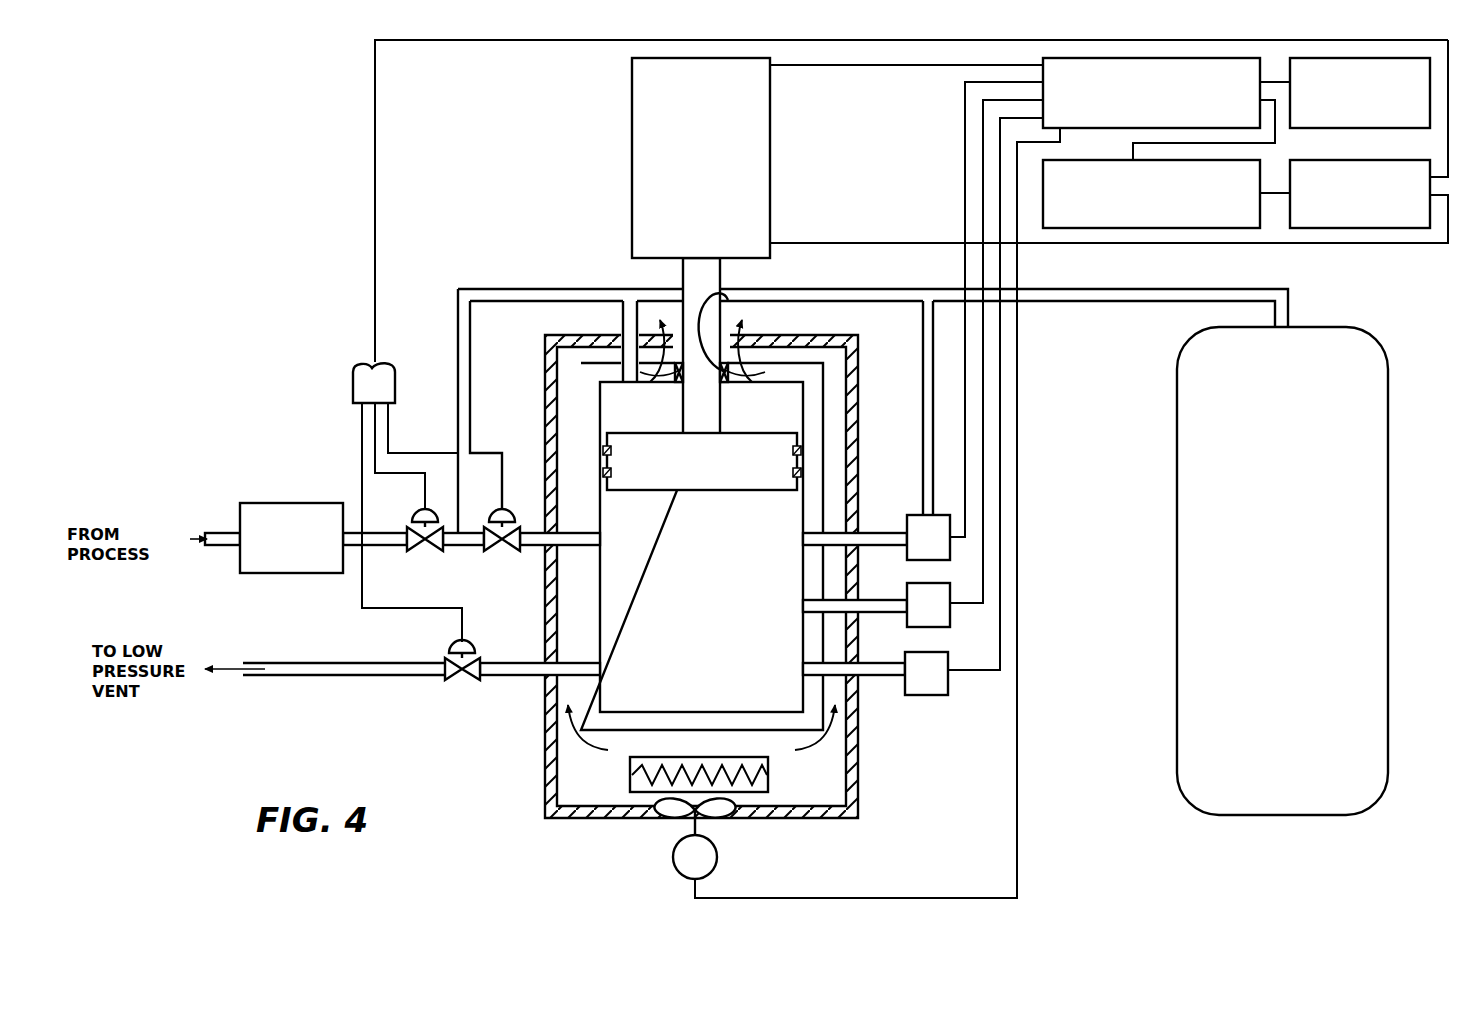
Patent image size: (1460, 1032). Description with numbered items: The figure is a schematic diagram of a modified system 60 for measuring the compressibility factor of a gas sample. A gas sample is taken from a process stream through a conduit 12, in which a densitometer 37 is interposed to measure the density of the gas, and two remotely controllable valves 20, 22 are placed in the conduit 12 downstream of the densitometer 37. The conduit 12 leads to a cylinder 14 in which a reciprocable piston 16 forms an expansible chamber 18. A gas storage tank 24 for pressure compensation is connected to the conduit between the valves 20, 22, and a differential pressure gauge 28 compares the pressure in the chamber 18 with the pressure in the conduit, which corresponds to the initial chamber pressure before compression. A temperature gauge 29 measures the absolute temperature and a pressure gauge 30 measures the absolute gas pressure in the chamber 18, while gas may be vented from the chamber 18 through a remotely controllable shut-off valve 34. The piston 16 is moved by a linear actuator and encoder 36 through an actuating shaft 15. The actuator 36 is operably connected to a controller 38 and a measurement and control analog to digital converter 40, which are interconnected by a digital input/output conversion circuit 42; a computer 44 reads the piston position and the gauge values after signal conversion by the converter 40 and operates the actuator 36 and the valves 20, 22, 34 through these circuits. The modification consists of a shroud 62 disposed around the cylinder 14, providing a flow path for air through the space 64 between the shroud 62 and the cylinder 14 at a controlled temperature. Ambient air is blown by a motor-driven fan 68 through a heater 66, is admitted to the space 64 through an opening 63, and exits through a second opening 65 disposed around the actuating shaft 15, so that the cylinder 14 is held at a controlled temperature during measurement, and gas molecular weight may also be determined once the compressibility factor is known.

The conduit 12 is at (222, 533).
The cylinder 14 is at (823, 405).
The actuating shaft 15 is at (683, 280).
The reciprocable piston 16 is at (702, 490).
The expansible chamber 18 is at (687, 621).
The remotely controllable valve 20 is at (430, 550).
The remotely controllable valve 22 is at (497, 550).
The gas storage tank 24 is at (1388, 490).
The differential pressure gauge 28 is at (907, 518).
The temperature gauge 29 is at (907, 590).
The pressure gauge 30 is at (922, 695).
The remotely controllable shut-off valve 34 is at (455, 683).
The linear actuator and encoder 36 is at (632, 125).
The densitometer 37 is at (290, 503).
The controller 38 is at (1375, 160).
The measurement and control analog to digital converter 40 is at (1117, 128).
The digital input/output conversion circuit 42 is at (1130, 228).
The computer 44 is at (1350, 128).
The modified system 60 is at (300, 237).
The shroud 62 is at (535, 748).
The opening 63 is at (652, 822).
The space 64 is at (833, 463).
The second opening 65 is at (722, 280).
The heater 66 is at (630, 778).
The motor-driven fan 68 is at (735, 820).